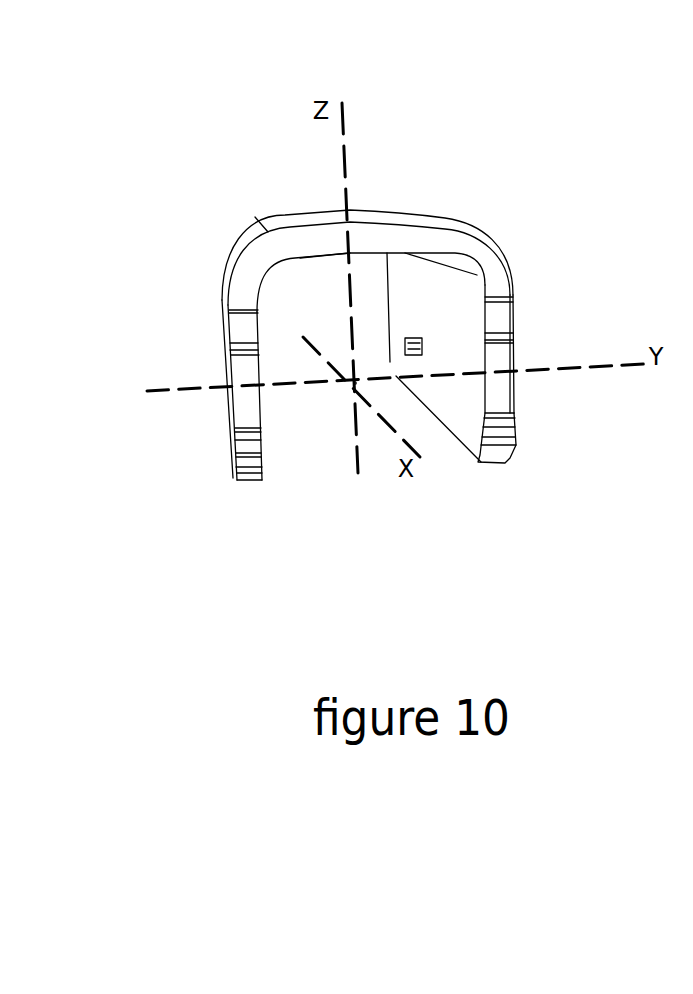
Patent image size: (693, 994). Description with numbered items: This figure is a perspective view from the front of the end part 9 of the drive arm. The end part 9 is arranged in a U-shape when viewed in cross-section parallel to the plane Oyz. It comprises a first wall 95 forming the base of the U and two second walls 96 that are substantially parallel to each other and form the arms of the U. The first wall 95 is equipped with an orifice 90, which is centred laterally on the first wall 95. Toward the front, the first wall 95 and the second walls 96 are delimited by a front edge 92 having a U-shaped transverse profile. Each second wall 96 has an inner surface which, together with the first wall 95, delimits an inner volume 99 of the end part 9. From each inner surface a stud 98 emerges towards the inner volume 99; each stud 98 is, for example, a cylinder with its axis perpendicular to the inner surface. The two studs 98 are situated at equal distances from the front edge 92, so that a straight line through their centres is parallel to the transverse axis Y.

The end part 9 is at (383, 129).
The orifice 90 is at (316, 216).
The front edge 92 is at (393, 223).
The first wall 95 is at (320, 255).
The second walls 96 is at (223, 297).
The stud 98 is at (258, 358).
The inner volume 99 is at (325, 395).